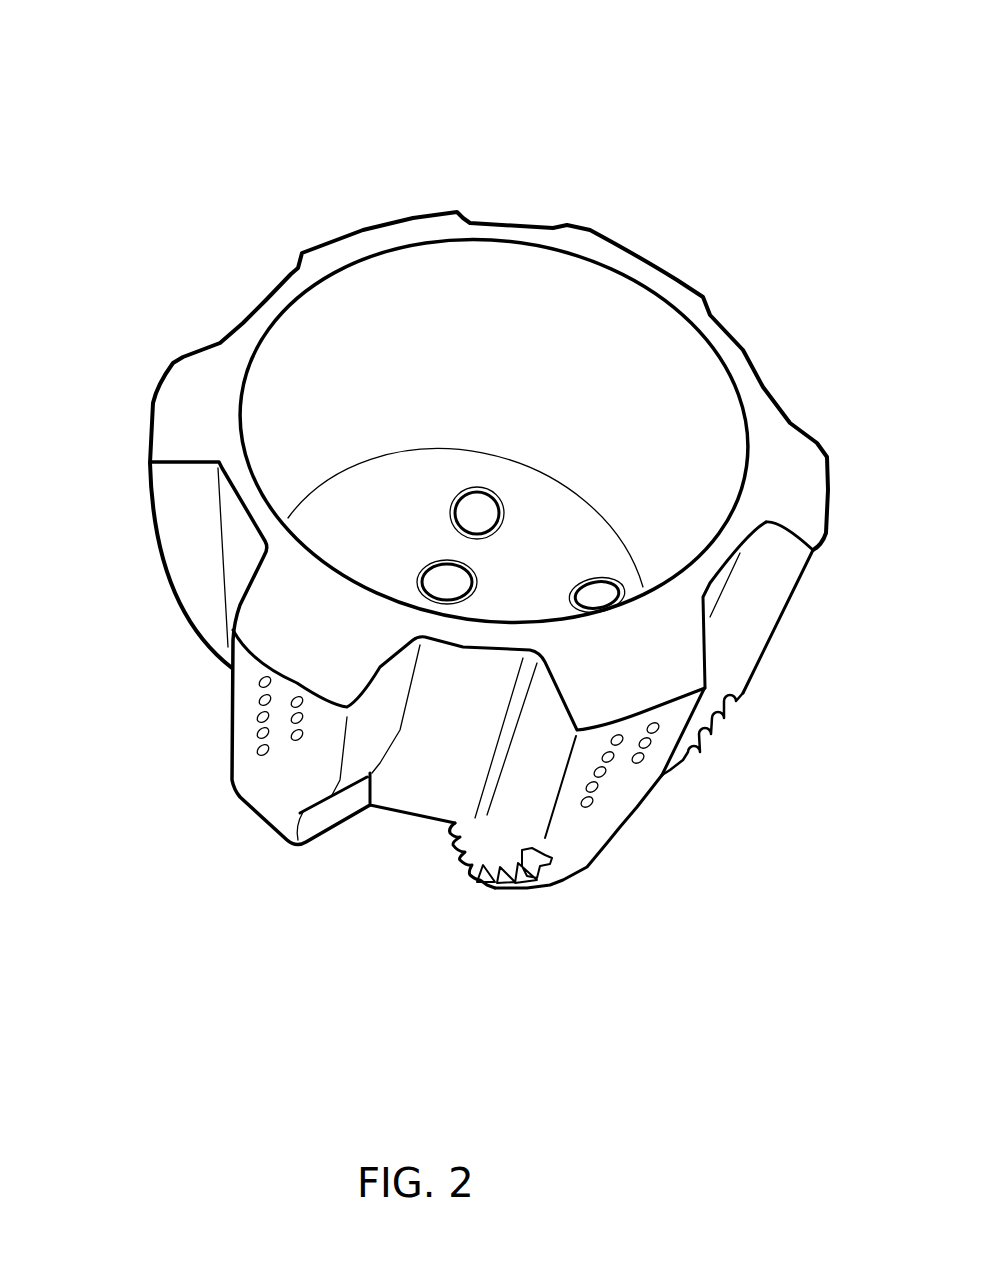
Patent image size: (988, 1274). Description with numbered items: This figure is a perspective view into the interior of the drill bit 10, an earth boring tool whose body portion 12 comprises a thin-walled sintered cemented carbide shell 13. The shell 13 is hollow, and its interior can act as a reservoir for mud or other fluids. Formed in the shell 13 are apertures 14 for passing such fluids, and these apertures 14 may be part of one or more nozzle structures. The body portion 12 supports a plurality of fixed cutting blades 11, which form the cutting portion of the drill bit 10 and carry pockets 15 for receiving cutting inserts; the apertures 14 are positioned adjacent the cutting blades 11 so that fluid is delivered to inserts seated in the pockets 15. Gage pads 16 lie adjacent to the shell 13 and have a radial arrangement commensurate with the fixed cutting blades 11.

The drill bit 10 is at (179, 103).
The fixed cutting blades 11 is at (478, 880).
The body portion 12 is at (486, 276).
The sintered cemented carbide shell 13 is at (637, 438).
The apertures 14 is at (440, 557).
The pockets 15 is at (702, 734).
The gage pads 16 is at (258, 722).